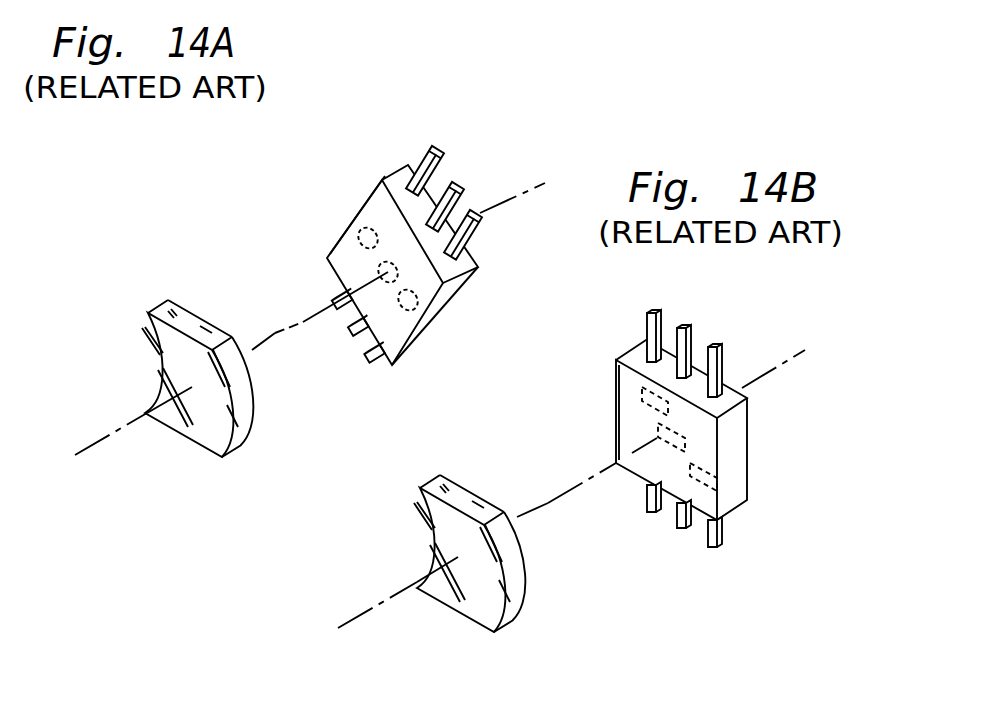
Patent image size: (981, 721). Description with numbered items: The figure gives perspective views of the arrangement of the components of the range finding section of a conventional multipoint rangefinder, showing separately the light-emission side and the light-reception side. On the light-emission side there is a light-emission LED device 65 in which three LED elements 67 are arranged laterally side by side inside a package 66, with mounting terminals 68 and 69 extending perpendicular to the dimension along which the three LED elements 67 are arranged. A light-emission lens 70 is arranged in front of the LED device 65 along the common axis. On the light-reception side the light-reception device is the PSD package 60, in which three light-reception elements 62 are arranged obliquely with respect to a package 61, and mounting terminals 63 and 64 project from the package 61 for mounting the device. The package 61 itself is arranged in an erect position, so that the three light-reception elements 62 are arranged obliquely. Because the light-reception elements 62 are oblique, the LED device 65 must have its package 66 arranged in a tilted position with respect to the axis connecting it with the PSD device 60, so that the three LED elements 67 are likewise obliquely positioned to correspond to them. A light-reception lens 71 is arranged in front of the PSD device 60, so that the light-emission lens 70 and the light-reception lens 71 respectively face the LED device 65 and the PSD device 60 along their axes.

In FIG. 14B, the PSD package 60 is at (603, 387).
In FIG. 14B, the package 61 is at (627, 423).
In FIG. 14B, the light-reception elements 62 is at (668, 410).
In FIG. 14B, the mounting terminals 63 is at (656, 312).
In FIG. 14B, the mounting terminals 64 is at (715, 548).
In FIG. 14A, the light-emission LED device 65 is at (374, 182).
In FIG. 14A, the package 66 is at (362, 208).
In FIG. 14A, the LED elements 67 is at (380, 262).
In FIG. 14A, the mounting terminals 68 is at (480, 213).
In FIG. 14A, the mounting terminals 69 is at (369, 365).
In FIG. 14A, the light-emission lens 70 is at (142, 348).
In FIG. 14B, the light-reception lens 71 is at (418, 545).